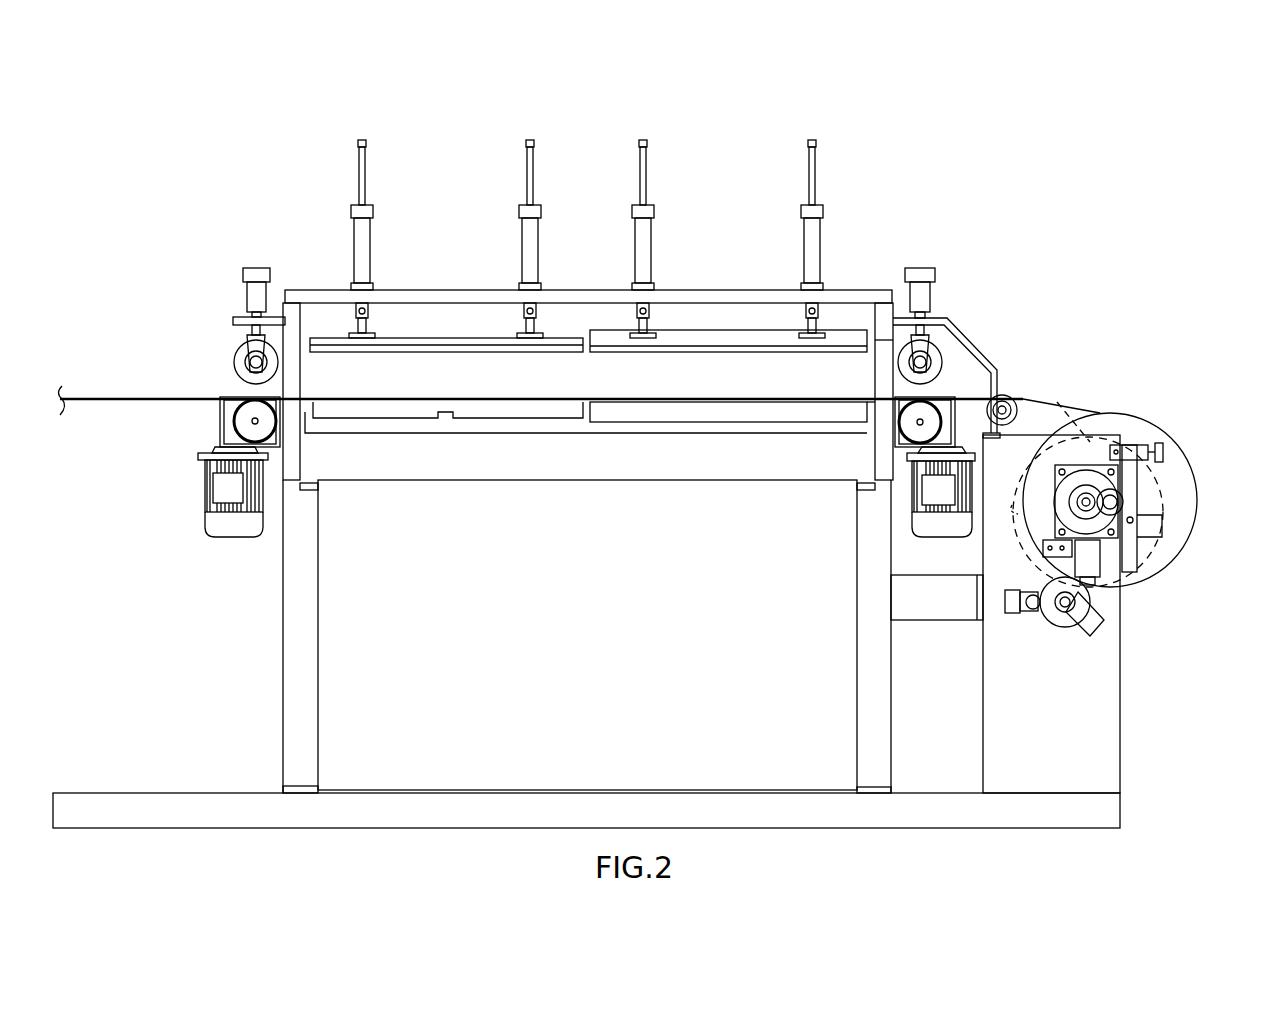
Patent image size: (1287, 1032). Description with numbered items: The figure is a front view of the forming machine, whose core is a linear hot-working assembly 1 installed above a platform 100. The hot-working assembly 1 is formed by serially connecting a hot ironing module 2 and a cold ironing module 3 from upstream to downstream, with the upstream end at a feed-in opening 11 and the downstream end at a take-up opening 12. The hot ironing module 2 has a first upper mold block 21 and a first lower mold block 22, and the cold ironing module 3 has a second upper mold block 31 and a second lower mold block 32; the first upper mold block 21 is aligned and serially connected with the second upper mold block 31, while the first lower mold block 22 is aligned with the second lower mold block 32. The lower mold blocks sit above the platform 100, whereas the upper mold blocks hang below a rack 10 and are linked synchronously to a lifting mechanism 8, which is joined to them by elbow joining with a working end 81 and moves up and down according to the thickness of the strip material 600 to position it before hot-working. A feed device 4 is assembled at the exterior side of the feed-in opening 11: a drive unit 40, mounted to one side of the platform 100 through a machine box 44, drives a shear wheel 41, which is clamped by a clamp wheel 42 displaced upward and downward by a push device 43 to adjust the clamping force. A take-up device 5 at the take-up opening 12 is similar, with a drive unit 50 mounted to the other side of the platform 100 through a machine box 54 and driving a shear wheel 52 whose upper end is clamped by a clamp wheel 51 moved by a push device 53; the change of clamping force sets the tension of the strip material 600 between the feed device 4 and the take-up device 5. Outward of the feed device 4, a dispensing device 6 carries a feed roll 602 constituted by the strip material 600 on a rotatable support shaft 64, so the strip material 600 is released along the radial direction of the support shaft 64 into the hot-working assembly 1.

The linear hot-working assembly 1 is at (740, 152).
The rack 10 is at (572, 296).
The feed-in opening 11 is at (886, 357).
The take-up opening 12 is at (294, 358).
The platform 100 is at (555, 462).
The hot ironing module 2 is at (732, 372).
The first upper mold block 21 is at (755, 340).
The first lower mold block 22 is at (700, 413).
The cold ironing module 3 is at (586, 384).
The second upper mold block 31 is at (398, 340).
The second lower mold block 32 is at (388, 405).
The feed device 4 is at (929, 396).
The drive unit 40 is at (925, 522).
The shear wheel 41 is at (962, 390).
The clamp wheel 42 is at (937, 350).
The push device 43 is at (920, 283).
The machine box 44 is at (897, 447).
The take-up device 5 is at (243, 424).
The drive unit 50 is at (227, 525).
The clamp wheel 51 is at (234, 360).
The shear wheel 52 is at (242, 420).
The push device 53 is at (252, 287).
The machine box 54 is at (268, 447).
The dispensing device 6 is at (1135, 579).
The support shaft 64 is at (1128, 503).
The strip material 600 is at (110, 398).
The feed roll 602 is at (1158, 432).
The lifting mechanism 8 is at (628, 239).
The working end 81 is at (830, 312).